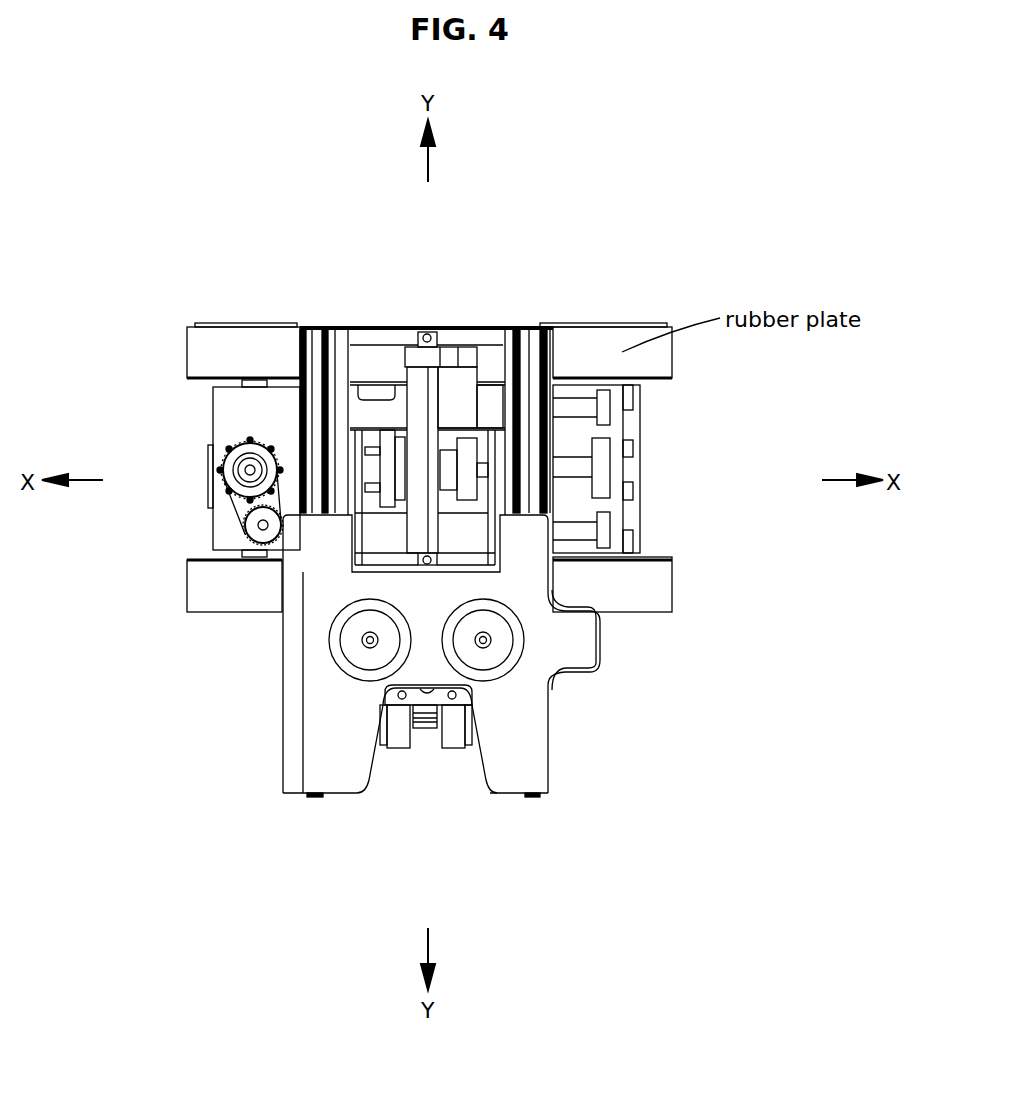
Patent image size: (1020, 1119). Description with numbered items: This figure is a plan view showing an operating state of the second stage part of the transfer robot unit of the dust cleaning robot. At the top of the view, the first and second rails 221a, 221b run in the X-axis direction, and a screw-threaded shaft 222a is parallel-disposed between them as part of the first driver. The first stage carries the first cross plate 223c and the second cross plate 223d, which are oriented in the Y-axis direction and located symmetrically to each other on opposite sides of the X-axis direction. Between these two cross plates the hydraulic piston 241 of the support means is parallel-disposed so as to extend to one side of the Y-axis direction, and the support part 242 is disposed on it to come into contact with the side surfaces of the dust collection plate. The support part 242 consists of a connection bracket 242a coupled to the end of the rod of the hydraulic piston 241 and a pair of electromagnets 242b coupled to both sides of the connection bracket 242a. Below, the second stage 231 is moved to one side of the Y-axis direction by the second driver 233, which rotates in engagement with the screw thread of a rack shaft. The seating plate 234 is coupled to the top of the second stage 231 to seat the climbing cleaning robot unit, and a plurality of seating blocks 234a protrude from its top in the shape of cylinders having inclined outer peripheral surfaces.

The second cross plate 223d is at (343, 338).
The first cross plate 223c is at (512, 338).
The hydraulic piston 241 is at (426, 332).
The first rail 221a is at (578, 407).
The shaft 222a is at (572, 466).
The second rail 221b is at (580, 530).
The second driver 233 is at (212, 490).
The second stage 231 is at (290, 687).
The seating plate 234 is at (527, 713).
The seating blocks 234a is at (500, 636).
The support part 242 is at (436, 786).
The connection bracket 242a is at (396, 740).
The electromagnets 242b is at (456, 742).